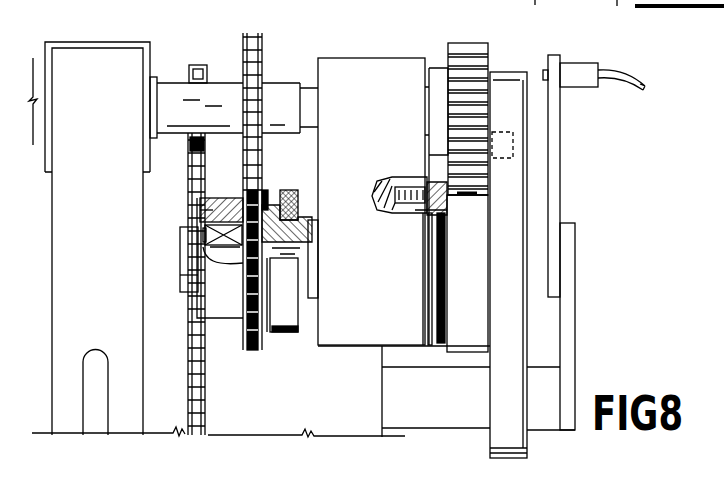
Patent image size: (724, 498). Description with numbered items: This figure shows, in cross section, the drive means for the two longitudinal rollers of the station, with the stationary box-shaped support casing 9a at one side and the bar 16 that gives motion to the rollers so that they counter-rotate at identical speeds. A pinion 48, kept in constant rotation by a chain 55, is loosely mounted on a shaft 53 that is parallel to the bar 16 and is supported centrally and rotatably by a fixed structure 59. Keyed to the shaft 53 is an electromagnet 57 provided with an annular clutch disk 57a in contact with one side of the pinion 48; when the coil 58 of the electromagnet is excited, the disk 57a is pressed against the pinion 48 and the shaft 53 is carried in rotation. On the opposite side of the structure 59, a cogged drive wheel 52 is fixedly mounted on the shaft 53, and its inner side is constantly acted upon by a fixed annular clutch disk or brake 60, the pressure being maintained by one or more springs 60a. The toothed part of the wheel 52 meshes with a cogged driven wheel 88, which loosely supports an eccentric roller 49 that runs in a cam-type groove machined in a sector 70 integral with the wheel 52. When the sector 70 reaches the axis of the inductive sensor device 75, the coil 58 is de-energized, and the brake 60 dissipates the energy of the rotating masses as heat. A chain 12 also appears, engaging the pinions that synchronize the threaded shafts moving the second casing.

The support casing 9a is at (113, 205).
The chain 12 is at (187, 350).
The bar 16 is at (167, 100).
The pinion 48 is at (250, 350).
The roller 49 is at (513, 140).
The cogged drive wheel 52 is at (467, 208).
The shaft 53 is at (268, 262).
The chain 55 is at (242, 58).
The electromagnet 57 is at (318, 232).
The annular clutch disk 57a is at (262, 197).
The coil 58 is at (290, 197).
The fixed structure 59 is at (397, 77).
The fixed annular clutch disk (brake) 60 is at (443, 248).
The spring 60a is at (448, 177).
The sector 70 is at (507, 315).
The inductive sensor device 75 is at (580, 73).
The cogged driven wheel 88 is at (467, 72).